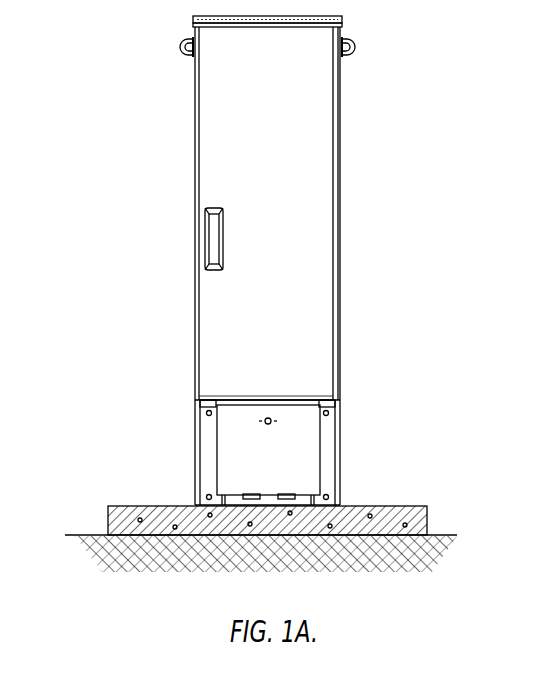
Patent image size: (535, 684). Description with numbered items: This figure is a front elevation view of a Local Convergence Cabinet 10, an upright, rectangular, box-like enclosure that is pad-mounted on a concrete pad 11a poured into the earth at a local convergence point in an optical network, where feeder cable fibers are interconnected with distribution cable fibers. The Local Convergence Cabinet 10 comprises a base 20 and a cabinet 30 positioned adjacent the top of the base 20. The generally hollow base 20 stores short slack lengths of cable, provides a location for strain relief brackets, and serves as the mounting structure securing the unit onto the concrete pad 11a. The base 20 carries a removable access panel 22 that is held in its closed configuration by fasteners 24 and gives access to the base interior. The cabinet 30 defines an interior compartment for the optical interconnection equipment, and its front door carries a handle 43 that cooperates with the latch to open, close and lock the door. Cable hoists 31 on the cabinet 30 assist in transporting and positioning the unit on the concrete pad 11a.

The Local Convergence Cabinet 10 is at (392, 237).
The cabinet 30 is at (195, 126).
The cable hoist 31 is at (356, 46).
The handle 43 is at (213, 238).
The base 20 is at (341, 460).
The access panel 22 is at (227, 452).
The fasteners 24 is at (270, 418).
The concrete pad 11a is at (128, 510).